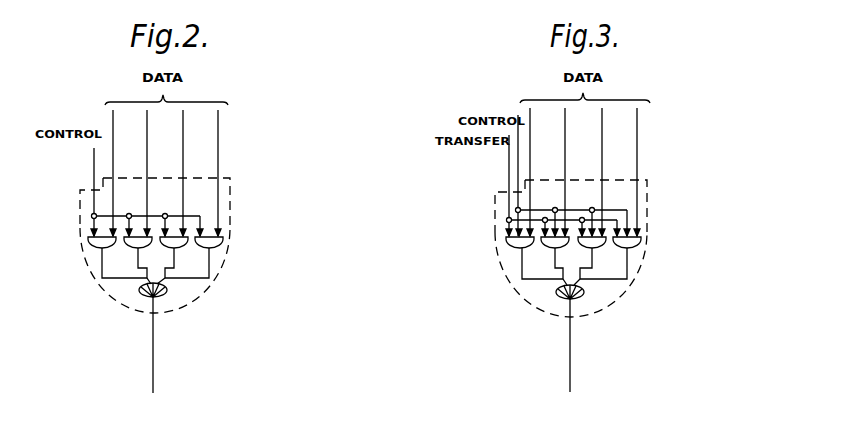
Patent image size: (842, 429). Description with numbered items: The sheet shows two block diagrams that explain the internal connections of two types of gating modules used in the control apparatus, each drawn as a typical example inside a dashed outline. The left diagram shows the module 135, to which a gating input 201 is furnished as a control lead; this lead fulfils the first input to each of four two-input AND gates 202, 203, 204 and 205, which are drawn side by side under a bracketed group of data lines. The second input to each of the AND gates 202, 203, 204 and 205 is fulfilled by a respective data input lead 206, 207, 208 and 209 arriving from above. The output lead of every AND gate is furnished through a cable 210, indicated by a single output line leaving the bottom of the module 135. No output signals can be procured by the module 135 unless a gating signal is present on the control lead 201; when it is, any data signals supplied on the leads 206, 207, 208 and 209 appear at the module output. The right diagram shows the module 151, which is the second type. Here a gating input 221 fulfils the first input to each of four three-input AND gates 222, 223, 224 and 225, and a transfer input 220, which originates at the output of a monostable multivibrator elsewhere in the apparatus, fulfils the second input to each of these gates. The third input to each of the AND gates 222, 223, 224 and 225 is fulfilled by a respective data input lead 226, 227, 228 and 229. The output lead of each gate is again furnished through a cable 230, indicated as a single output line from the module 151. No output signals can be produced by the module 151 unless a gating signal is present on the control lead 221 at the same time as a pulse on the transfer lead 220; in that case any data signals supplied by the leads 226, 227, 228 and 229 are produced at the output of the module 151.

In FIG. 2, the gating input 201 is at (94, 150).
In FIG. 2, the 2-input AND gate 202 is at (97, 251).
In FIG. 2, the 2-input AND gate 203 is at (131, 256).
In FIG. 2, the 2-input AND gate 204 is at (180, 249).
In FIG. 2, the 2-input AND gate 205 is at (224, 249).
In FIG. 2, the data input lead 206 is at (113, 121).
In FIG. 2, the data input lead 207 is at (146, 156).
In FIG. 2, the data input lead 208 is at (183, 146).
In FIG. 2, the data input lead 209 is at (217, 146).
In FIG. 2, the cable 210 is at (155, 311).
In FIG. 2, the module 135 is at (232, 222).
In FIG. 3, the transfer input 220 is at (509, 162).
In FIG. 3, the gating input 221 is at (518, 173).
In FIG. 3, the 3-input AND gate 222 is at (503, 250).
In FIG. 3, the 3-input AND gate 223 is at (547, 258).
In FIG. 3, the 3-input AND gate 224 is at (598, 249).
In FIG. 3, the 3-input AND gate 225 is at (642, 250).
In FIG. 3, the data input lead 226 is at (544, 150).
In FIG. 3, the data input lead 227 is at (565, 142).
In FIG. 3, the data input lead 228 is at (602, 158).
In FIG. 3, the data input lead 229 is at (637, 148).
In FIG. 3, the cable 230 is at (572, 311).
In FIG. 3, the module 151 is at (647, 212).